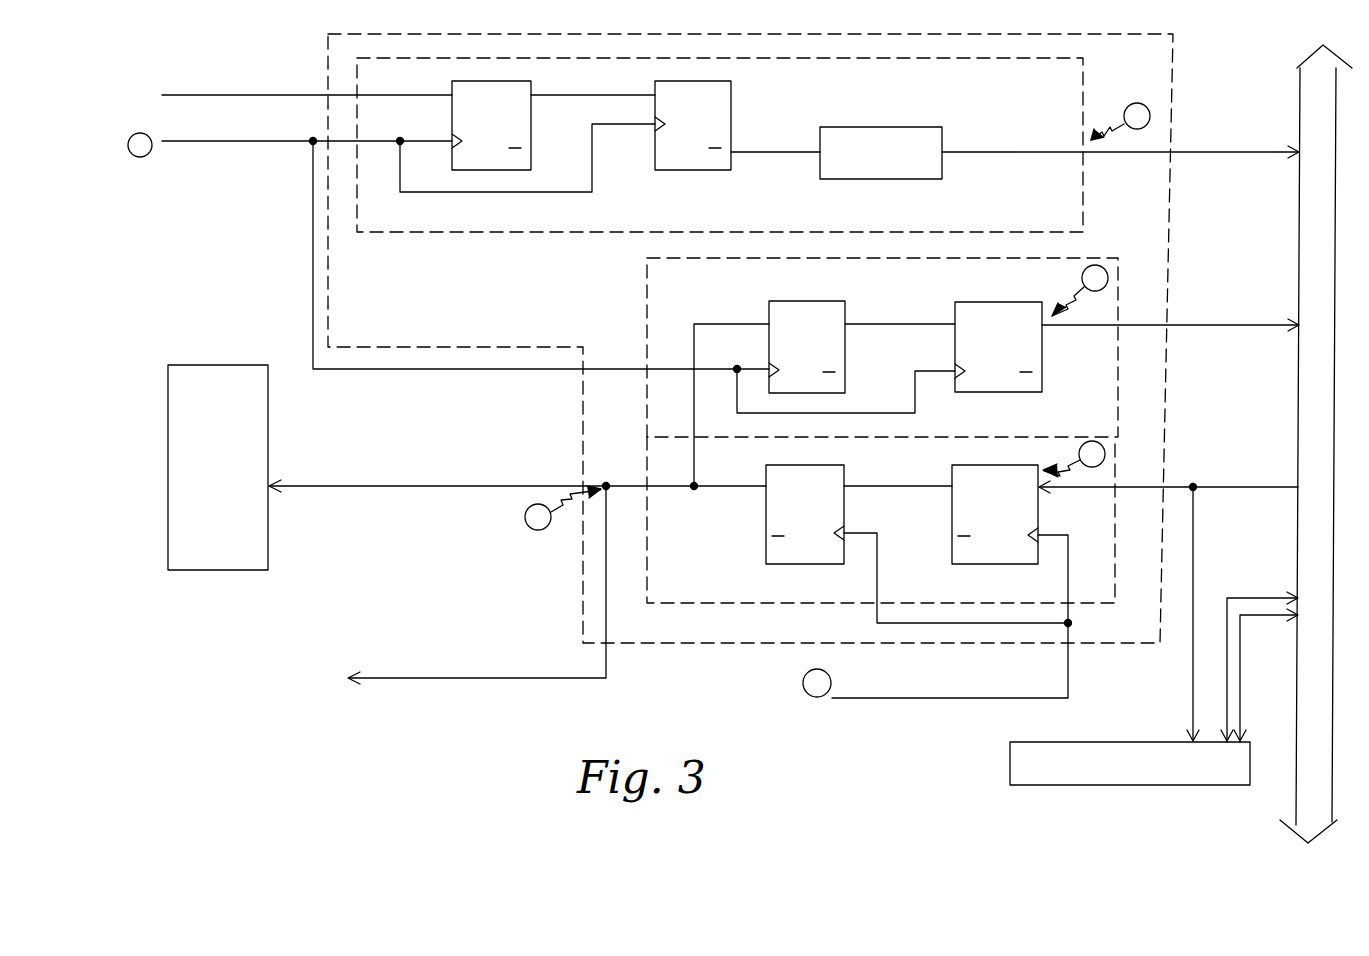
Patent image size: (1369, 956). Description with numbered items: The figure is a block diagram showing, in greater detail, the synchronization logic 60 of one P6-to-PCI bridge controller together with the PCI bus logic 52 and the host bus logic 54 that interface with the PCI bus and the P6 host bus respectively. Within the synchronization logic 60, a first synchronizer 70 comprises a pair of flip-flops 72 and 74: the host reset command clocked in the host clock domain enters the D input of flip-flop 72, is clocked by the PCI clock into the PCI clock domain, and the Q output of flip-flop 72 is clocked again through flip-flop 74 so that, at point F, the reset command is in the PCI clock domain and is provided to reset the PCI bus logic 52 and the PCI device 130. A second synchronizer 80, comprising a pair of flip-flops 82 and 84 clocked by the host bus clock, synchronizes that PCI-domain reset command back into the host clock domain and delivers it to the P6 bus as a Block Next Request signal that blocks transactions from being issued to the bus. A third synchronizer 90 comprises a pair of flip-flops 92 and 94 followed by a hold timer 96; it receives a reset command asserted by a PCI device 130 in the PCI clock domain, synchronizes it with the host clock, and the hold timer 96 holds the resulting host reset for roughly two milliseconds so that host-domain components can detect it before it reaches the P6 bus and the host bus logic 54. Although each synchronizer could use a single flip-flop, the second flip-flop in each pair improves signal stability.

The PCI bus logic 52 is at (268, 407).
The host bus logic 54 is at (1212, 785).
The synchronization logic 60 is at (1173, 56).
The first synchronizer 70 is at (647, 603).
The flip-flop 72 is at (982, 564).
The flip-flop 74 is at (783, 564).
The second synchronizer 80 is at (647, 258).
The flip-flop 82 is at (795, 301).
The flip-flop 84 is at (975, 302).
The third synchronizer 90 is at (1085, 76).
The flip-flop 92 is at (531, 163).
The flip-flop 94 is at (731, 82).
The hold timer 96 is at (893, 127).
The PCI device 130 is at (477, 594).